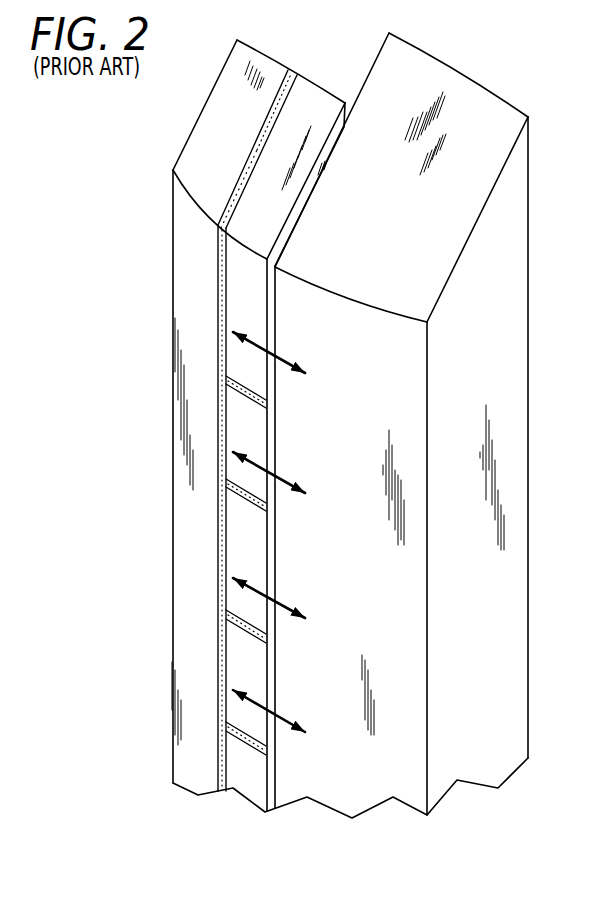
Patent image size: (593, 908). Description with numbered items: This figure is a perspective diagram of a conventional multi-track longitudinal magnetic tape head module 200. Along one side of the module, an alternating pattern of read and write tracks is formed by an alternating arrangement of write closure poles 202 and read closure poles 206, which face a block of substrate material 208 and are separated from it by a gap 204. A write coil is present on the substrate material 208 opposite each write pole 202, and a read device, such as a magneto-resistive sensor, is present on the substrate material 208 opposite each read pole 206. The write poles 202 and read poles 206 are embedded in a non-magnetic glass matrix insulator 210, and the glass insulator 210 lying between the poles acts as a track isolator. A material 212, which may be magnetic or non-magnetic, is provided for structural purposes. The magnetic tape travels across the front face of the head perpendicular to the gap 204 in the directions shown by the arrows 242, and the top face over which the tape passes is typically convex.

The multi-track longitudinal tape head module 200 is at (183, 822).
The write closure pole 202 is at (260, 303).
The gap 204 is at (297, 213).
The read closure pole 206 is at (260, 438).
The block of substrate material 208 is at (380, 407).
The non-magnetic glass matrix insulator 210 is at (218, 263).
The structural material 212 is at (245, 135).
The arrow 242 is at (283, 357).